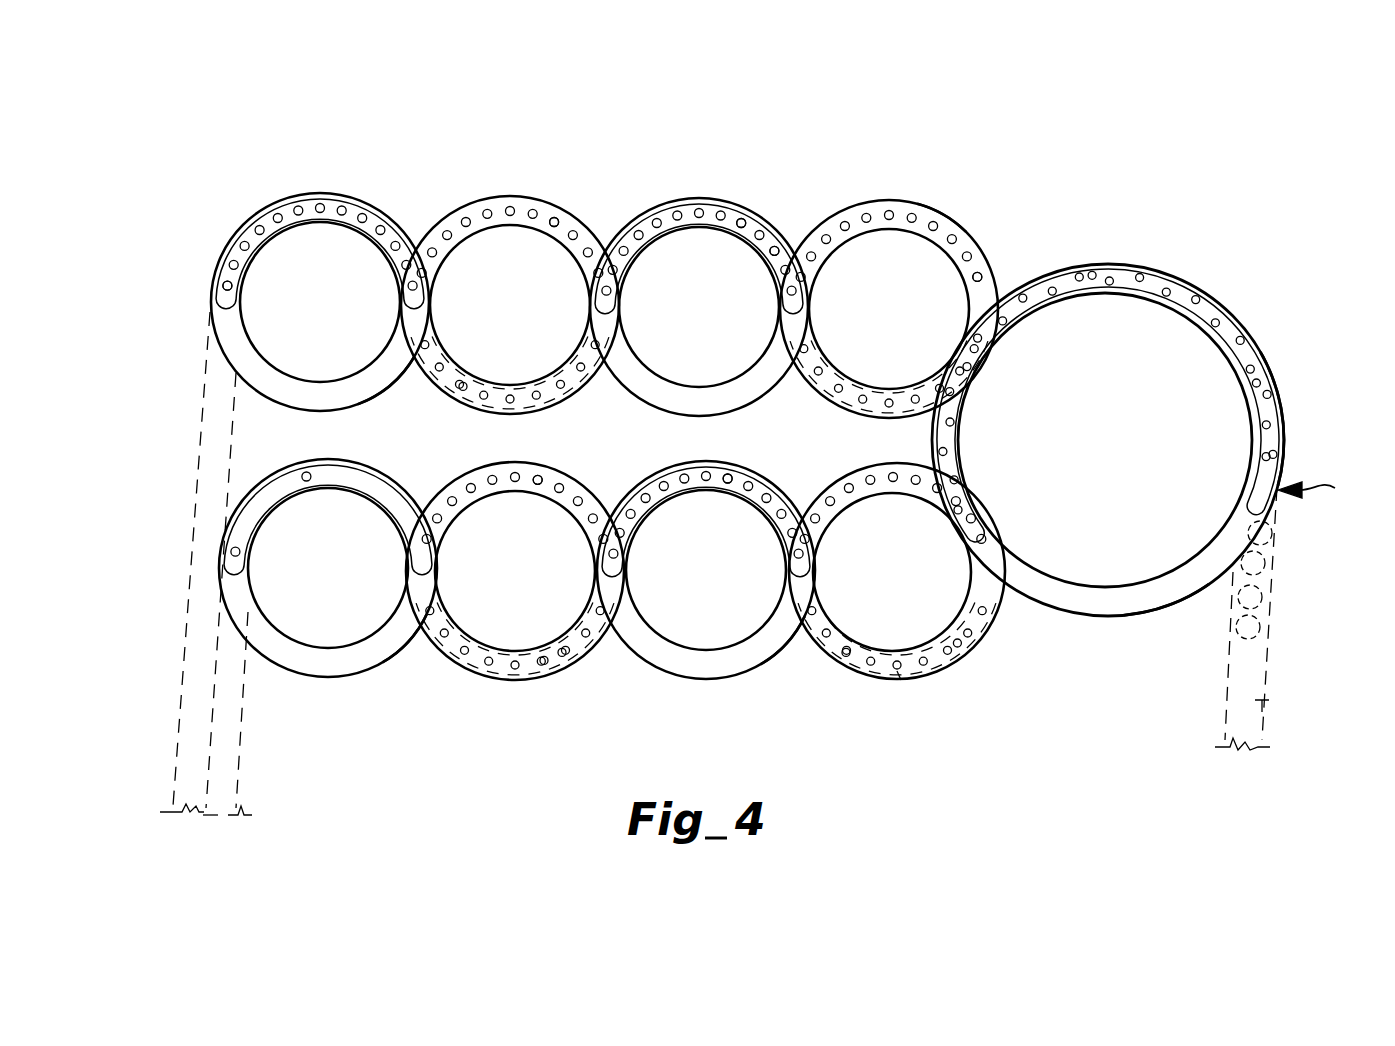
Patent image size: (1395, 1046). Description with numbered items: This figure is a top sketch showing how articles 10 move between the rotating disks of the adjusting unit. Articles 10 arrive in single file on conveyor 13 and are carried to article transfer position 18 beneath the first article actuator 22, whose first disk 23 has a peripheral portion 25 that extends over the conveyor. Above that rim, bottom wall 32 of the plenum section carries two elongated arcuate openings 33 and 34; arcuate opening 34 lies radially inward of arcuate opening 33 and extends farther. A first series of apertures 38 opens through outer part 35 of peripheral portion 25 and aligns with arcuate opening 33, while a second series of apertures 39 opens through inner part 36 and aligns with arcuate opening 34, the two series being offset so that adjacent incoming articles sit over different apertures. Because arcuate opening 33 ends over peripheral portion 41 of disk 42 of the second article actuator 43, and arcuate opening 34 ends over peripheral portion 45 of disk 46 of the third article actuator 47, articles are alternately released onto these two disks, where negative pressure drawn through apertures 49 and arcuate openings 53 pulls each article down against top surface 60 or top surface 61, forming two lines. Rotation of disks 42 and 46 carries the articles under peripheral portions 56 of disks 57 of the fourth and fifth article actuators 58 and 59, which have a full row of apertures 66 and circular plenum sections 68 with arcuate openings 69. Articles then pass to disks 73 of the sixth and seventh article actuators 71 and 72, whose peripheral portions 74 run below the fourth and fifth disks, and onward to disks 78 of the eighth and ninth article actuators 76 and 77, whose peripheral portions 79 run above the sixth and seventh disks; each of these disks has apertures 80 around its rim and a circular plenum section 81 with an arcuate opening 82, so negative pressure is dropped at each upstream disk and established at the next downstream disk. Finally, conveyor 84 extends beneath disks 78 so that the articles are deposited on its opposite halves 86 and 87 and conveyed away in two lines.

The articles 10 is at (1262, 560).
The conveyor 13 is at (1276, 690).
The article transfer position 18 is at (1327, 492).
The first article actuator 22 is at (1076, 276).
The first disk 23 is at (1157, 283).
The peripheral portion 25 is at (1240, 322).
The bottom wall 32 is at (1148, 595).
The arcuate opening 33 is at (1283, 447).
The arcuate opening 34 is at (1260, 457).
The outer part 35 is at (1206, 293).
The inner part 36 is at (1163, 302).
The apertures 38 is at (1274, 408).
The apertures 39 is at (1252, 385).
The peripheral portion 41 is at (982, 265).
The disk 42 is at (923, 207).
The second article actuator 43 is at (868, 199).
The peripheral portion 45 is at (900, 684).
The disk 46 is at (940, 676).
The third article actuator 47 is at (872, 678).
The apertures 49 is at (995, 292).
The arcuate openings 53 is at (836, 406).
The peripheral portion 56 is at (741, 218).
The disk 57 is at (698, 197).
The fourth article actuator 58 is at (652, 207).
The fifth article actuator 59 is at (755, 664).
The top surface 60 is at (897, 212).
The top surface 61 is at (895, 472).
The apertures 66 is at (777, 250).
The circular plenum section 68 is at (770, 250).
The arcuate openings 69 is at (720, 213).
The sixth article actuator 71 is at (492, 200).
The seventh article actuator 72 is at (528, 473).
The disk 73 is at (515, 207).
The peripheral portion 74 is at (585, 240).
The eighth article actuator 76 is at (292, 398).
The ninth article actuator 77 is at (305, 668).
The disk 78 is at (318, 414).
The peripheral portion 79 is at (398, 390).
The apertures 80 is at (361, 214).
The circular plenum section 81 is at (286, 206).
The arcuate opening 82 is at (250, 232).
The conveyor 84 is at (200, 416).
The half of conveyor 86 is at (188, 724).
The half of conveyor 87 is at (228, 738).